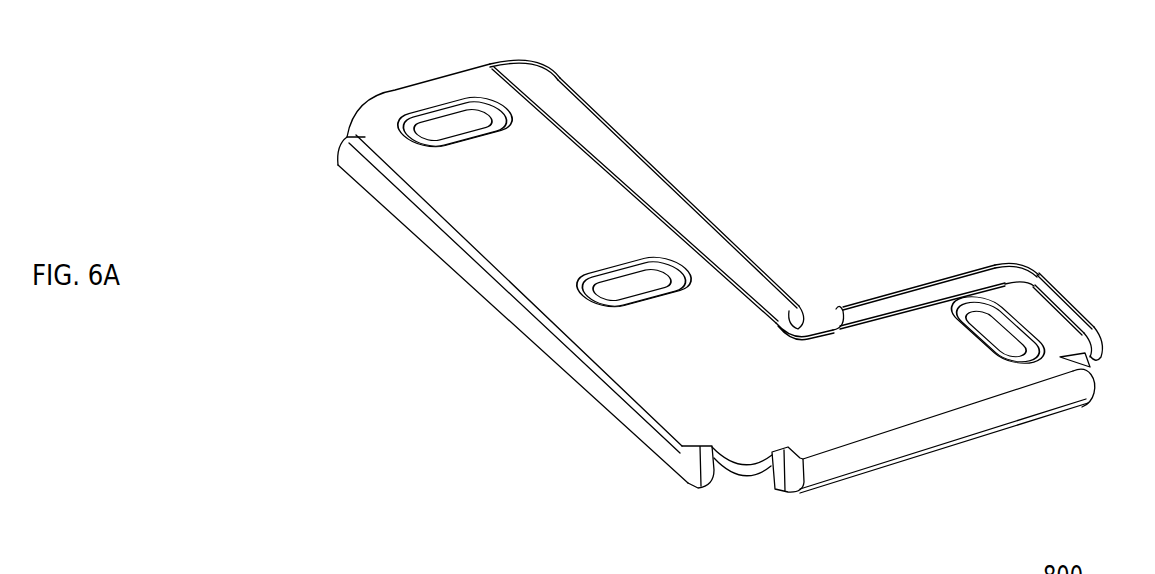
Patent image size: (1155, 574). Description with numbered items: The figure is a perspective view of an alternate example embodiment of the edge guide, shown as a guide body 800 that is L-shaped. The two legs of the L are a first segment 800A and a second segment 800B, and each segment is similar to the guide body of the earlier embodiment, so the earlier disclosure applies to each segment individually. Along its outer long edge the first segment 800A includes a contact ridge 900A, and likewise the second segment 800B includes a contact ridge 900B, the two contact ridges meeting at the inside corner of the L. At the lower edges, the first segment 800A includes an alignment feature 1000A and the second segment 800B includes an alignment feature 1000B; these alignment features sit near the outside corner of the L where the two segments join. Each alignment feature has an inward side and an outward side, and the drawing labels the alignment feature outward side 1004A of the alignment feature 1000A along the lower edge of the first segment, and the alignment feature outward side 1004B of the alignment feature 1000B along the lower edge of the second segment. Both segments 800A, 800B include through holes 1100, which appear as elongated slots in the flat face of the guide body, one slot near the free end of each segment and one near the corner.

The guide body 800 is at (882, 137).
The segment 800A is at (557, 219).
The segment 800B is at (952, 376).
The contact ridge 900A is at (647, 159).
The contact ridge 900B is at (952, 276).
The alignment feature 1000A is at (703, 480).
The alignment feature 1000B is at (787, 490).
The alignment feature outward side 1004A is at (560, 355).
The alignment feature outward side 1004B is at (930, 438).
The through holes 1100 is at (457, 128).